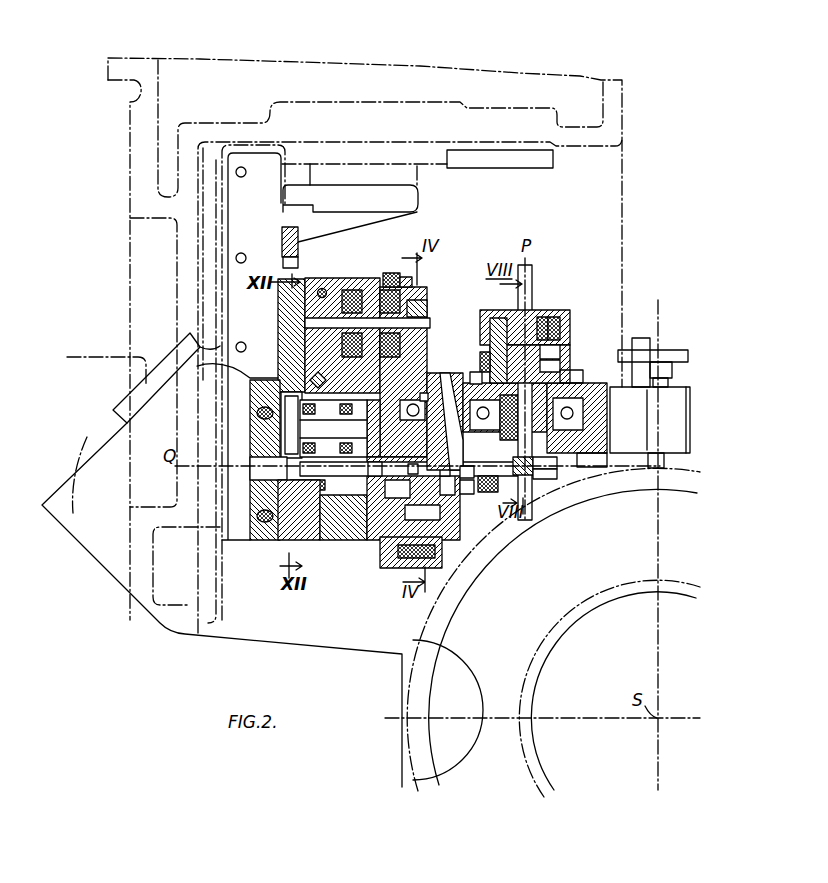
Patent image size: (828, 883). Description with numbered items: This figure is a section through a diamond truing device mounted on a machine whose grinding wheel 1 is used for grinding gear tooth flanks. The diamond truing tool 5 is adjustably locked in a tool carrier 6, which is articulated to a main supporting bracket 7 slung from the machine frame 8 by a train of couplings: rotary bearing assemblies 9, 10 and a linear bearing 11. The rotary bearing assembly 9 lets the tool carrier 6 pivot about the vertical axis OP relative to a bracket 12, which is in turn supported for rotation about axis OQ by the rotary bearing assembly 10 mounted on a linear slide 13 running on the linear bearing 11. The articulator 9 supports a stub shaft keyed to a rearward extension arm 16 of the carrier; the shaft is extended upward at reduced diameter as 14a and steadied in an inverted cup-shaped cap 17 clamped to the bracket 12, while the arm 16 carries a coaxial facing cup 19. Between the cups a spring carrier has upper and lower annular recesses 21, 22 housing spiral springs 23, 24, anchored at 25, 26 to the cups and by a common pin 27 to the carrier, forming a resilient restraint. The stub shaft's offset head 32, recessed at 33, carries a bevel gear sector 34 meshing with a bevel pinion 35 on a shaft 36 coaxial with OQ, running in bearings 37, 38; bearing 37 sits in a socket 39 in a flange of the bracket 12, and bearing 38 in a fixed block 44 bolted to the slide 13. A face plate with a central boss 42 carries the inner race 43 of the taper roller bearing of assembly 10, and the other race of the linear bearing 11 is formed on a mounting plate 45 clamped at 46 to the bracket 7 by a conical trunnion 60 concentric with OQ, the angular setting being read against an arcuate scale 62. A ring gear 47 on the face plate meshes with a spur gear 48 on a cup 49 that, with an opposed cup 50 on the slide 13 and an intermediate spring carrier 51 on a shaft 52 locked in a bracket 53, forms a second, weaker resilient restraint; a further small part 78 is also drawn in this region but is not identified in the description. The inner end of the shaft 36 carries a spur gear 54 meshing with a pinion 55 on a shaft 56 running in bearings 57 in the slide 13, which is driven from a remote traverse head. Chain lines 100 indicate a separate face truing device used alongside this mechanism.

The grinding wheel 1 is at (427, 612).
The diamond truing tool 5 is at (664, 462).
The tool carrier 6 is at (680, 436).
The main supporting bracket 7 is at (253, 382).
The machine frame 8 is at (507, 72).
The rotary bearing assembly 9 is at (565, 412).
The rotary bearing assembly 10 is at (434, 537).
The linear bearing 11 is at (314, 377).
The bracket 12 is at (582, 455).
The linear slide 13 is at (310, 290).
The reduced-diameter upward extension of stub shaft 14a is at (521, 318).
The rearward extension arm 16 is at (598, 395).
The inverted cup-shaped cap 17 is at (568, 322).
The cup 19 is at (582, 379).
The upper annular recess 21 is at (542, 317).
The lower annular recess 22 is at (560, 350).
The spiral spring 23 is at (556, 319).
The spiral spring 24 is at (566, 364).
The spring anchorage 25 is at (498, 316).
The spring anchorage 26 is at (478, 372).
The common pin 27 is at (490, 352).
The offset head 32 is at (532, 476).
The recess 33 is at (528, 486).
The bevel gear sector 34 is at (542, 495).
The bevel pinion 35 is at (490, 497).
The shaft 36 is at (469, 502).
The bearing 37 is at (452, 405).
The bearing 38 is at (413, 498).
The socket 39 is at (471, 488).
The central boss 42 is at (438, 472).
The inner race 43 is at (419, 463).
The fixed block 44 is at (400, 395).
The mounting plate 45 is at (288, 335).
The clamping arrangement 46 is at (263, 420).
The ring gear 47 is at (392, 550).
The spur gear 48 is at (388, 273).
The cup 49 is at (411, 284).
The cup 50 is at (347, 287).
The spring carrier 51 is at (371, 292).
The shaft 52 is at (430, 323).
The bracket 53 is at (420, 305).
The spur gear 54 is at (322, 522).
The pinion 55 is at (376, 470).
The shaft 56 is at (324, 425).
The bearings 57 is at (320, 464).
The conical trunnion 60 is at (260, 488).
The arcuate scale 62 is at (298, 260).
The pin 78 is at (328, 288).
The face truing device 100 is at (376, 650).